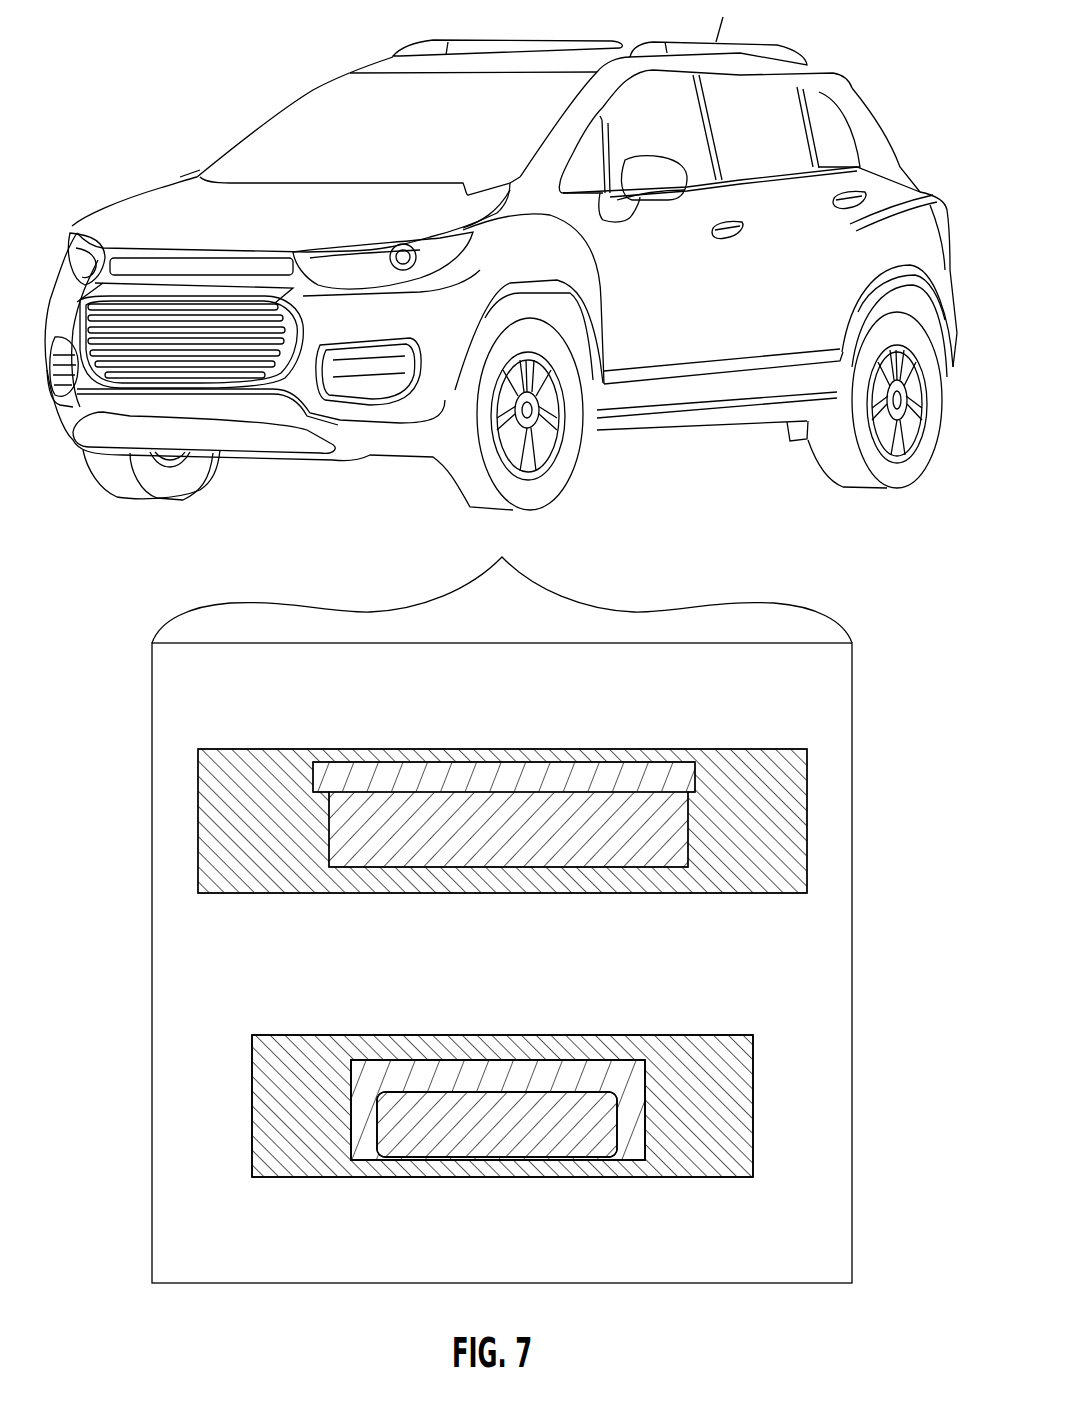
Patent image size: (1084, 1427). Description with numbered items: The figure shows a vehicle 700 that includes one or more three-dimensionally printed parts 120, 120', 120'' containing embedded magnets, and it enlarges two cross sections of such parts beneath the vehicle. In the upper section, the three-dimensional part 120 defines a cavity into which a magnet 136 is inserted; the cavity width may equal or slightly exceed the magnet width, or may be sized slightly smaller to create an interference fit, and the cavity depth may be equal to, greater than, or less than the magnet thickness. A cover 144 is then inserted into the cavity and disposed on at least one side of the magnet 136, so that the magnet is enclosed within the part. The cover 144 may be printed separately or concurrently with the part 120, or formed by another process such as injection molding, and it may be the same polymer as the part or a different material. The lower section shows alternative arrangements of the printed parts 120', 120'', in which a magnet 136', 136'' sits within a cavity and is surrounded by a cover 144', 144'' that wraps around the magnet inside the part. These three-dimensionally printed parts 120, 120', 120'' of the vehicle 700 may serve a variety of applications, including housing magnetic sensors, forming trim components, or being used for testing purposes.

The vehicle 700 is at (913, 183).
The three-dimensional part 120 is at (502, 797).
The cover 144 is at (504, 747).
The magnet 136 is at (426, 863).
The three-dimensionally printed part 120' is at (510, 1075).
The three-dimensionally printed part 120'' is at (510, 1075).
The cover 144' is at (498, 1066).
The cover 144'' is at (498, 1066).
The magnet 136' is at (433, 1072).
The magnet 136'' is at (433, 1072).